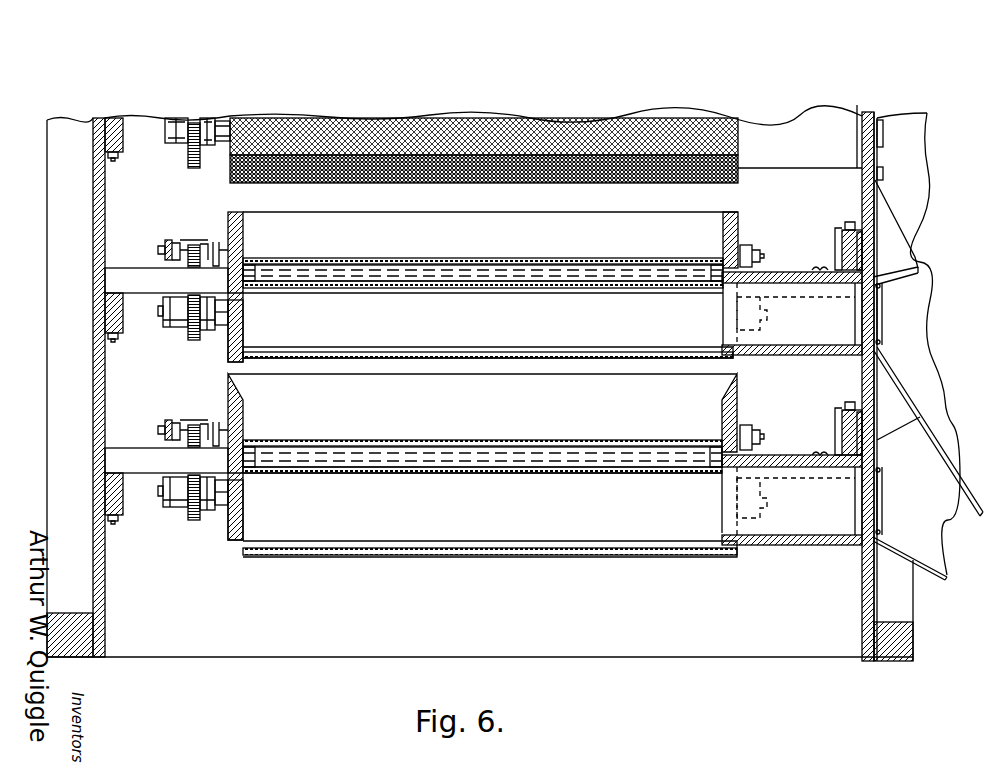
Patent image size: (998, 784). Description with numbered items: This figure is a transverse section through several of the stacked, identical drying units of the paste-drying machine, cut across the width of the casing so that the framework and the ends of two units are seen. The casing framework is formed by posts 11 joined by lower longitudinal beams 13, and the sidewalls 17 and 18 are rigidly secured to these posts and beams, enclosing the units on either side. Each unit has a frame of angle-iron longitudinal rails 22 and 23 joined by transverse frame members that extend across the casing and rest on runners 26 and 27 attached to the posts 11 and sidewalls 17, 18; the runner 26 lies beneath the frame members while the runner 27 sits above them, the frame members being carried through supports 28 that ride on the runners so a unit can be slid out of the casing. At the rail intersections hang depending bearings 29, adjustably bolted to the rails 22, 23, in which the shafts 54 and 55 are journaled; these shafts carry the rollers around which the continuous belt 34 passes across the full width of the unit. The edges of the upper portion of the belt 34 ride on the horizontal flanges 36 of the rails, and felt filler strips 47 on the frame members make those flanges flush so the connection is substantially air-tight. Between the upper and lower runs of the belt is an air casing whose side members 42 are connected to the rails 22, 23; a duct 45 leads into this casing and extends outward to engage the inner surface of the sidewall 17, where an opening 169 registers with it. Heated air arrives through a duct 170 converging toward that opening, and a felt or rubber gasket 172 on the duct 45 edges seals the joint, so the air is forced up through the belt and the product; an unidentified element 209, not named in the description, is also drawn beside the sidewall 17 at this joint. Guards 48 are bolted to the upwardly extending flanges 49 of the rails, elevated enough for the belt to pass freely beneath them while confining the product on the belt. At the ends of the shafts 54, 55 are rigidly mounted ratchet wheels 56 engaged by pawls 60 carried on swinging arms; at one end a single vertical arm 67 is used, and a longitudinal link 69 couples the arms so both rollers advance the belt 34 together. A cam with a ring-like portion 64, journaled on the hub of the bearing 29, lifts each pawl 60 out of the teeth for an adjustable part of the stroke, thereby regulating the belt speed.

The post 11 is at (50, 178).
The lower longitudinal beam 13 is at (95, 660).
The sidewall 17 is at (867, 200).
The sidewall 18 is at (93, 232).
The longitudinal rail 22 is at (243, 245).
The longitudinal rail 23 is at (722, 258).
The runner 26 is at (100, 298).
The runner 27 is at (862, 248).
The support 28 is at (842, 228).
The depending bearing 29 is at (245, 318).
The continuous belt 34 is at (565, 552).
The horizontal flange 36 is at (718, 268).
The side member 42 is at (243, 330).
The duct 45 is at (793, 355).
The felt filler strip 47 is at (465, 258).
The guard 48 is at (243, 418).
The upwardly extending flange 49 is at (750, 293).
The shaft 54 is at (160, 320).
The shaft 55 is at (160, 500).
The ratchet wheel 56 is at (193, 340).
The pawl 60 is at (194, 245).
The ring-like portion 64 is at (212, 325).
The vertical arm 67 is at (175, 330).
The longitudinal link 69 is at (167, 240).
The opening 169 is at (867, 310).
The duct 170 is at (923, 442).
The gasket 172 is at (855, 322).
The pipe 209 is at (875, 327).